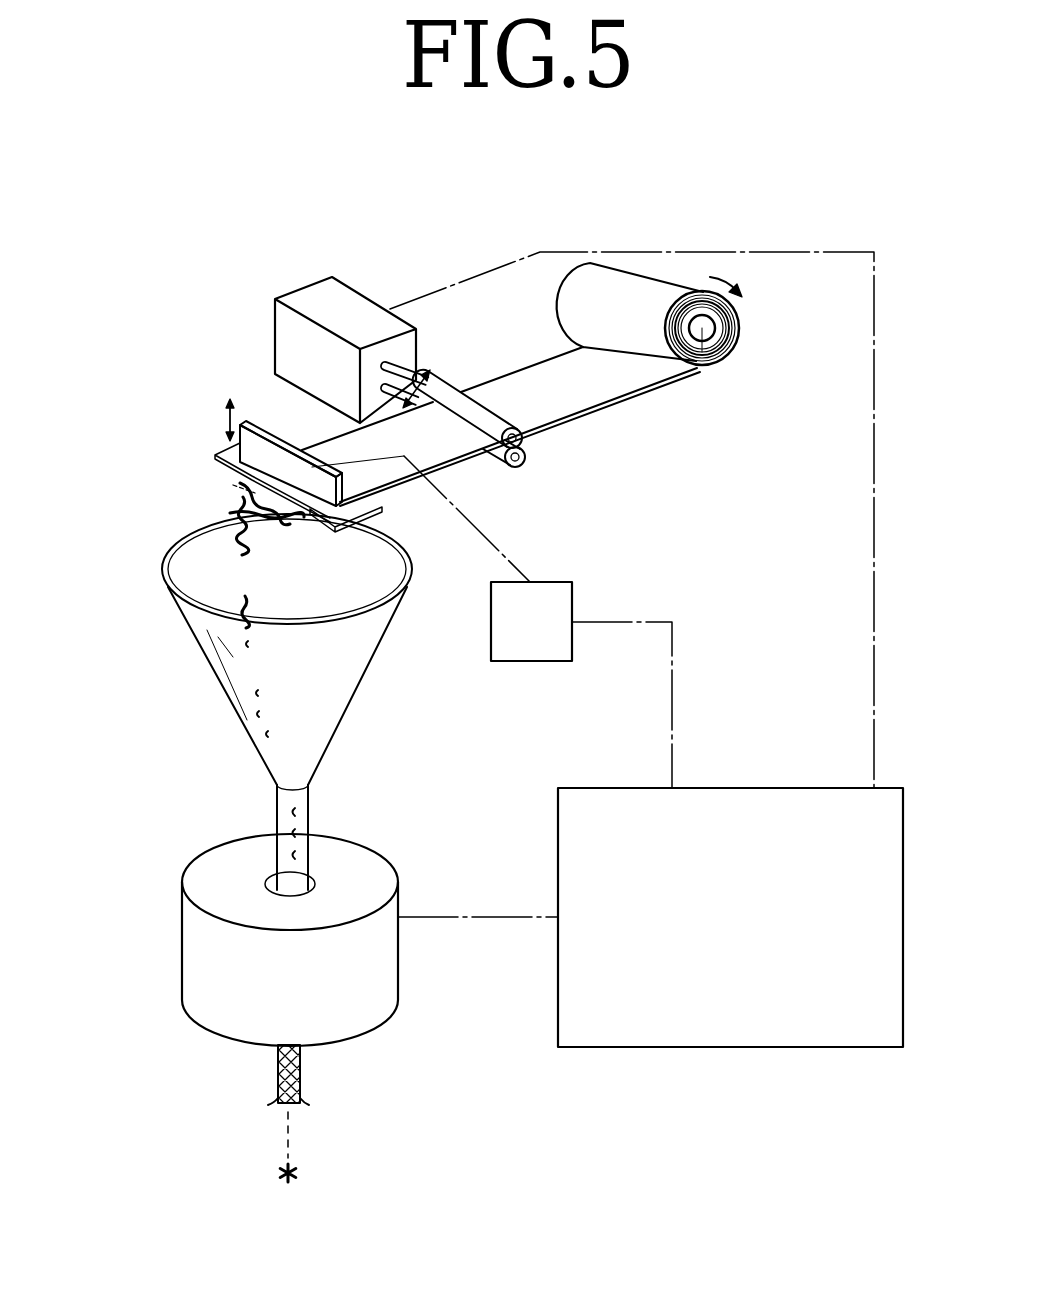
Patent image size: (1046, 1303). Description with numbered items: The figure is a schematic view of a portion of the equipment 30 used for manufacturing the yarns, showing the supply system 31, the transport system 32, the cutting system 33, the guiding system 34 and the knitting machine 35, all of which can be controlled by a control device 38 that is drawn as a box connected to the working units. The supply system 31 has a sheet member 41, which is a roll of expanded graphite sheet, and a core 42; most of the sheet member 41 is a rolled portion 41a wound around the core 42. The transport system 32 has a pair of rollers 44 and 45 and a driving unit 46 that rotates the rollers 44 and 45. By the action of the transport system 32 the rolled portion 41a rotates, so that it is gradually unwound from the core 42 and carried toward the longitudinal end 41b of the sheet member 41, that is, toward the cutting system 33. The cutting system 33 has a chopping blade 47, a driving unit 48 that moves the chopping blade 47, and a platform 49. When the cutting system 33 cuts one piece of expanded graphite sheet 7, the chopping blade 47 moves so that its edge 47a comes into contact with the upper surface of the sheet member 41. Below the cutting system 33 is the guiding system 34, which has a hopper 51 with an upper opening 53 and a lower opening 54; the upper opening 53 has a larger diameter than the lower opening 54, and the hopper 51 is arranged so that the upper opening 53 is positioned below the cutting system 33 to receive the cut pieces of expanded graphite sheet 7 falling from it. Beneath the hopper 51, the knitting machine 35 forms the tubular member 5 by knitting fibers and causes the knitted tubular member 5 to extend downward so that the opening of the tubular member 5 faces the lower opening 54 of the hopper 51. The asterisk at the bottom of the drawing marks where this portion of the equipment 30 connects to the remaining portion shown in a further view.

The equipment 30 is at (187, 190).
The transport system 32 is at (365, 356).
The driving unit 46 is at (275, 337).
The roller 44 is at (483, 403).
The roller 45 is at (493, 467).
The sheet member 41 is at (537, 365).
The rolled portion 41a is at (727, 357).
The longitudinal end 41b is at (233, 485).
The supply system 31 is at (690, 358).
The core 42 is at (702, 352).
The cutting system 33 is at (241, 438).
The chopping blade 47 is at (272, 433).
The platform 49 is at (215, 455).
The edge 47a is at (367, 520).
The guiding system 34 is at (262, 700).
The upper opening 53 is at (192, 544).
The hopper 51 is at (347, 710).
The lower opening 54 is at (297, 887).
The piece of expanded graphite sheet 7 is at (238, 545).
The tubular member 5 is at (278, 1065).
The knitting machine 35 is at (412, 1027).
The driving unit 48 is at (523, 662).
The control device 38 is at (767, 1047).